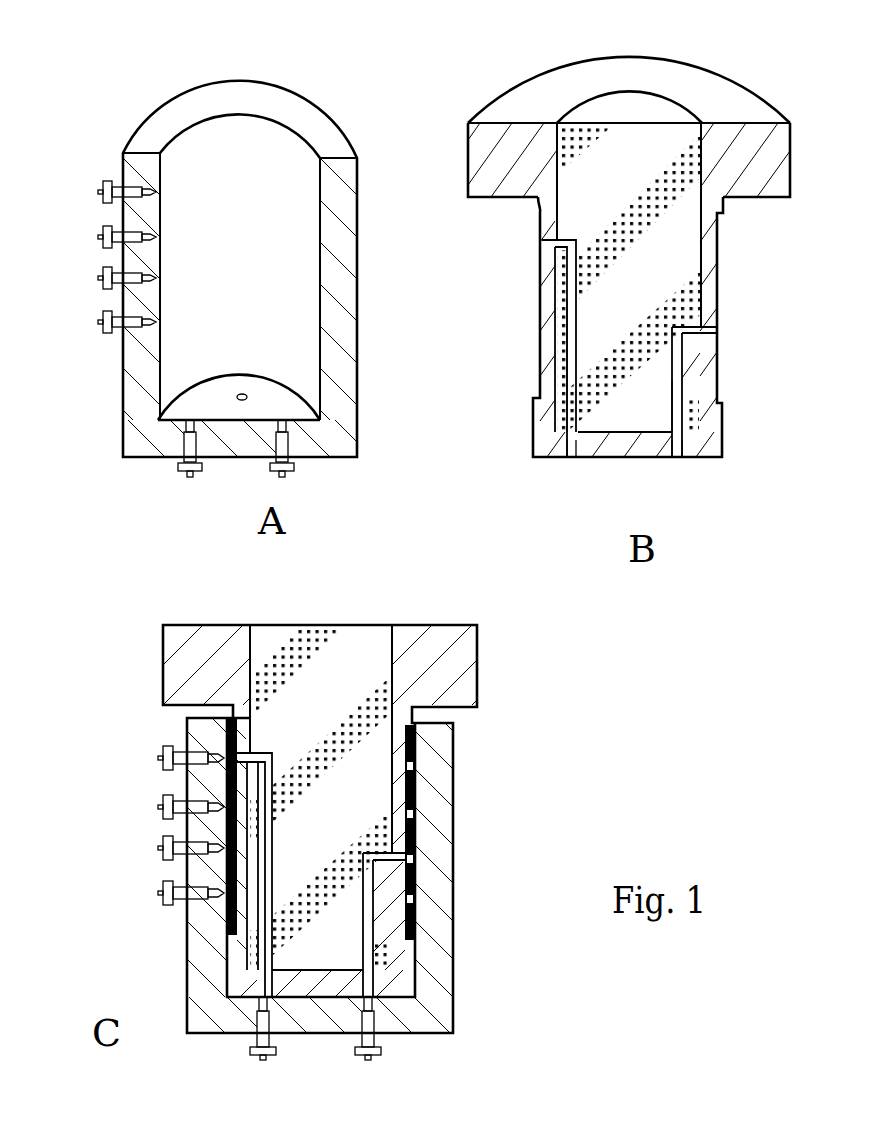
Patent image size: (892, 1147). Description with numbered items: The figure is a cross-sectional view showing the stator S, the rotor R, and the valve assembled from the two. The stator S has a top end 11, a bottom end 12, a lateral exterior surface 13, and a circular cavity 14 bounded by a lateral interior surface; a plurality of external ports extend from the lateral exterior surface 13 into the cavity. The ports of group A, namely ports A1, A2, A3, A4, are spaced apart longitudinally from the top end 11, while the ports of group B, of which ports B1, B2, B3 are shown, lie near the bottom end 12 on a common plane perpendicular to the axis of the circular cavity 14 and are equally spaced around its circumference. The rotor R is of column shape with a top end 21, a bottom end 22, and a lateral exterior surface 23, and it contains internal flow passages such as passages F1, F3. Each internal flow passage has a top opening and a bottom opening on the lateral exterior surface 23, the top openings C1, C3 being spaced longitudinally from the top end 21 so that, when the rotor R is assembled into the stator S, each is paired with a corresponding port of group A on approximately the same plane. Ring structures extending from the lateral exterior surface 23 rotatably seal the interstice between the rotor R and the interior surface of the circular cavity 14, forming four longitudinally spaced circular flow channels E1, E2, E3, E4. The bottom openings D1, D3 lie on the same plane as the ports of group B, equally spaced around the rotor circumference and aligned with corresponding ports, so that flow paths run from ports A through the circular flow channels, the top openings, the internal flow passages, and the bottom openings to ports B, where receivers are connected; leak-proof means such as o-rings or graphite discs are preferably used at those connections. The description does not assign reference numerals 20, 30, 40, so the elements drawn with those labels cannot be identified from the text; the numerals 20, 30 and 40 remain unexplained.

The top end 11 is at (217, 97).
The bottom end 12 is at (245, 463).
The lateral exterior surface 13 is at (297, 246).
The circular cavity 14 is at (260, 193).
The container body 20 is at (704, 277).
The top end 21 is at (636, 80).
The bottom end 22 is at (607, 465).
The lateral exterior surface 23 is at (540, 293).
The powder 30 is at (652, 162).
The sleeve 40 is at (233, 737).
The port A1 is at (105, 193).
The port A2 is at (105, 238).
The port A3 is at (105, 280).
The port A4 is at (105, 323).
The port B1 is at (180, 466).
The port B2 is at (241, 392).
The port B3 is at (292, 466).
The top opening C1 is at (543, 241).
The top opening C3 is at (720, 332).
The bottom opening D1 is at (573, 463).
The bottom opening D3 is at (677, 464).
The circular flow channel E1 is at (412, 768).
The circular flow channel E2 is at (412, 812).
The circular flow channel E3 is at (413, 858).
The circular flow channel E4 is at (413, 898).
The internal flow passage F1 is at (578, 315).
The internal flow passage F3 is at (672, 386).
The rotor R is at (806, 164).
The stator S is at (387, 306).